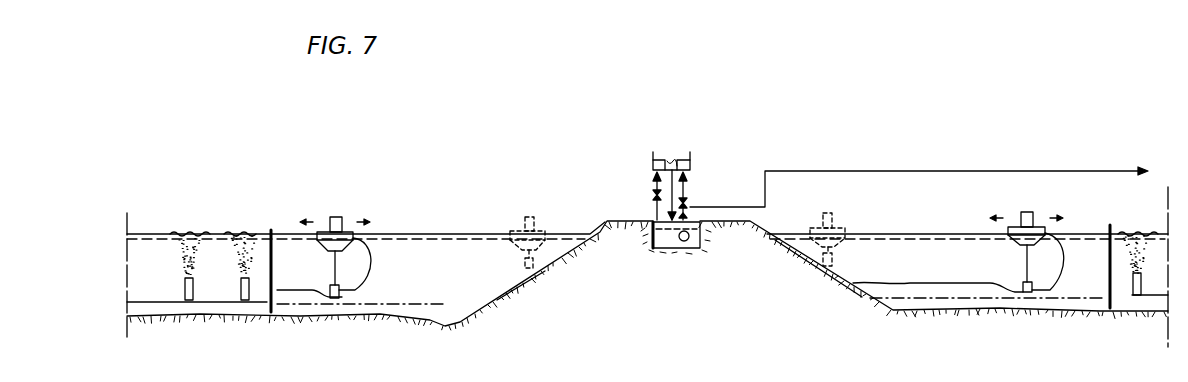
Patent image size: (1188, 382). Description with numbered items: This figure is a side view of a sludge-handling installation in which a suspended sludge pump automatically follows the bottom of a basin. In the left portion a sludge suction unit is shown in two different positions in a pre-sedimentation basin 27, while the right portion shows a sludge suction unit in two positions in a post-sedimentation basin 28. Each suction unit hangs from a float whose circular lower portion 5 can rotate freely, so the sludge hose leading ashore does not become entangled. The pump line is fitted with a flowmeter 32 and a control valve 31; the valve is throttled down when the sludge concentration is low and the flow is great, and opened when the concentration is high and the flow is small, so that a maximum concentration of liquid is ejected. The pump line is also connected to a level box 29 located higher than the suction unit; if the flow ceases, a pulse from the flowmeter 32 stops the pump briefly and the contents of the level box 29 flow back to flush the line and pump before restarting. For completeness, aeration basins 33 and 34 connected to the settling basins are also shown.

The lower portion of the float 5 is at (333, 251).
The pre-sedimentation basin 27 is at (412, 253).
The post-sedimentation basin 28 is at (903, 248).
The level box 29 is at (690, 163).
The control valve 31 is at (653, 210).
The flowmeter 32 is at (655, 216).
The aeration basin 33 is at (148, 247).
The aeration basin 34 is at (1150, 230).